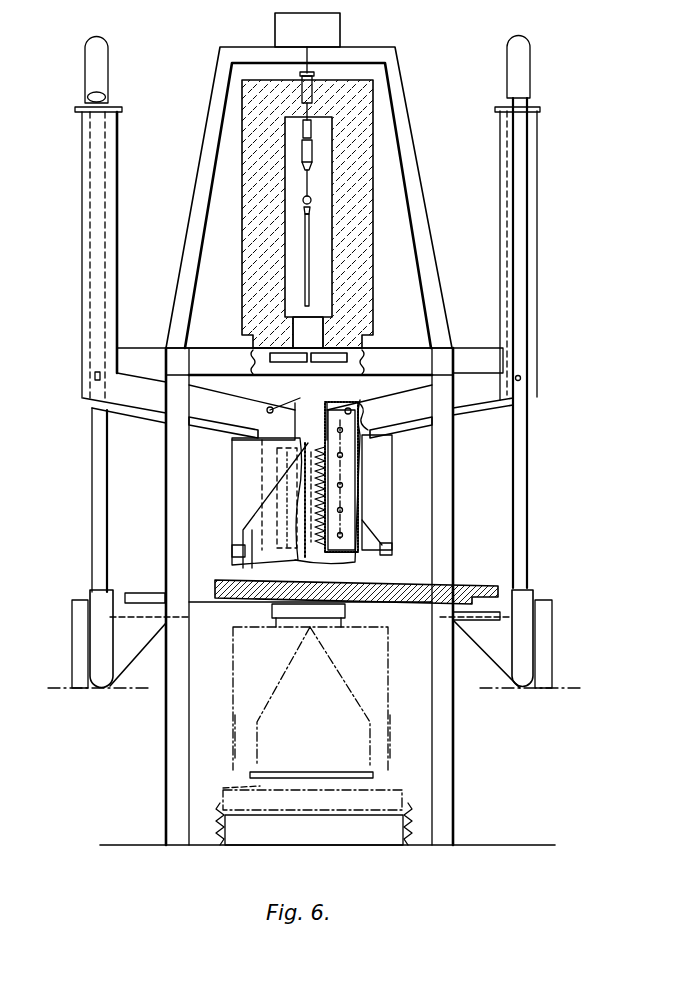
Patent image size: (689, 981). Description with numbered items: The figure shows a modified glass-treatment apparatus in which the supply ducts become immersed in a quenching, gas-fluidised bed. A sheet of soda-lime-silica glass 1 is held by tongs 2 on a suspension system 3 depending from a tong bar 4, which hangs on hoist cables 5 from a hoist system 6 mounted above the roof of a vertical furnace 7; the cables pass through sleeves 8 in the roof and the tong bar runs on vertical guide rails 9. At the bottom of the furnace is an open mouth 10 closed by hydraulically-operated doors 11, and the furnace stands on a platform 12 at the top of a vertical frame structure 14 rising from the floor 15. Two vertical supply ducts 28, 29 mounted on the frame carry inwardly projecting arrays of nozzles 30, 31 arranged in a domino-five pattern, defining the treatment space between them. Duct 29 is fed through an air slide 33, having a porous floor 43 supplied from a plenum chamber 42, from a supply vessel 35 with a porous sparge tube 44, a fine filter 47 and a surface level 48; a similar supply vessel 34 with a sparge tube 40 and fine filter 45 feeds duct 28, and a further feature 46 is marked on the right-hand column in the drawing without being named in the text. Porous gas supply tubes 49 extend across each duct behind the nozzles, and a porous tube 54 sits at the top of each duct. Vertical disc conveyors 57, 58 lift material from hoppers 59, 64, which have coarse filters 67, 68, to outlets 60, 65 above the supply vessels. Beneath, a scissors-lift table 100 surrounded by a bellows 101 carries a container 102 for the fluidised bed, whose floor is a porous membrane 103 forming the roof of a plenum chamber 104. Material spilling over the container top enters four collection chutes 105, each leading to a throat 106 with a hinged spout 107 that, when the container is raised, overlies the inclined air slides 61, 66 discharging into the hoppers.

The sheet of soda-lime-silica glass 1 is at (305, 246).
The tongs 2 is at (302, 201).
The suspension system 3 is at (305, 165).
The tong bar 4 is at (303, 150).
The hoist cables 5 is at (302, 128).
The hoist system 6 is at (328, 42).
The vertical furnace 7 is at (365, 239).
The sleeves 8 is at (301, 89).
The vertical guide rails 9 is at (306, 72).
The open mouth 10 is at (300, 328).
The hydraulically-operated doors 11 is at (277, 363).
The platform 12 is at (397, 360).
The vertical frame structure 14 is at (447, 741).
The floor 15 is at (522, 846).
The vertical supply duct 28 is at (393, 490).
The vertical supply duct 29 is at (270, 518).
The array of nozzles 30 is at (322, 446).
The array of nozzles 31 is at (279, 421).
The air slide 33 is at (142, 372).
The vertical supply vessel 34 is at (503, 292).
The vertical supply vessel 35 is at (117, 228).
The porous sparge tube 40 is at (523, 378).
The plenum chamber 42 is at (218, 425).
The porous floor 43 is at (100, 412).
The porous sparge tube 44 is at (94, 375).
The fine filter 45 is at (503, 113).
The right column bore 46 is at (512, 236).
The fine filter 47 is at (88, 115).
The surface level 48 is at (93, 240).
The porous gas supply tubes 49 is at (270, 491).
The porous tube 54 is at (346, 410).
The vertical disc conveyor 57 is at (520, 447).
The vertical disc conveyor 58 is at (100, 470).
The hopper 59 is at (488, 647).
The outlet 60 is at (517, 60).
The air slide 61 is at (422, 592).
The hopper 64 is at (133, 636).
The outlet 65 is at (95, 63).
The air slide 66 is at (203, 593).
The coarse filter 67 is at (522, 591).
The coarse filter 68 is at (137, 612).
The scissors-lift table 100 is at (403, 800).
The bellows 101 is at (410, 832).
The container 102 is at (272, 568).
The porous membrane 103 is at (250, 775).
The plenum chamber 104 is at (225, 788).
The collection chutes 105 is at (232, 468).
The throat 106 is at (235, 535).
The spout 107 is at (232, 563).